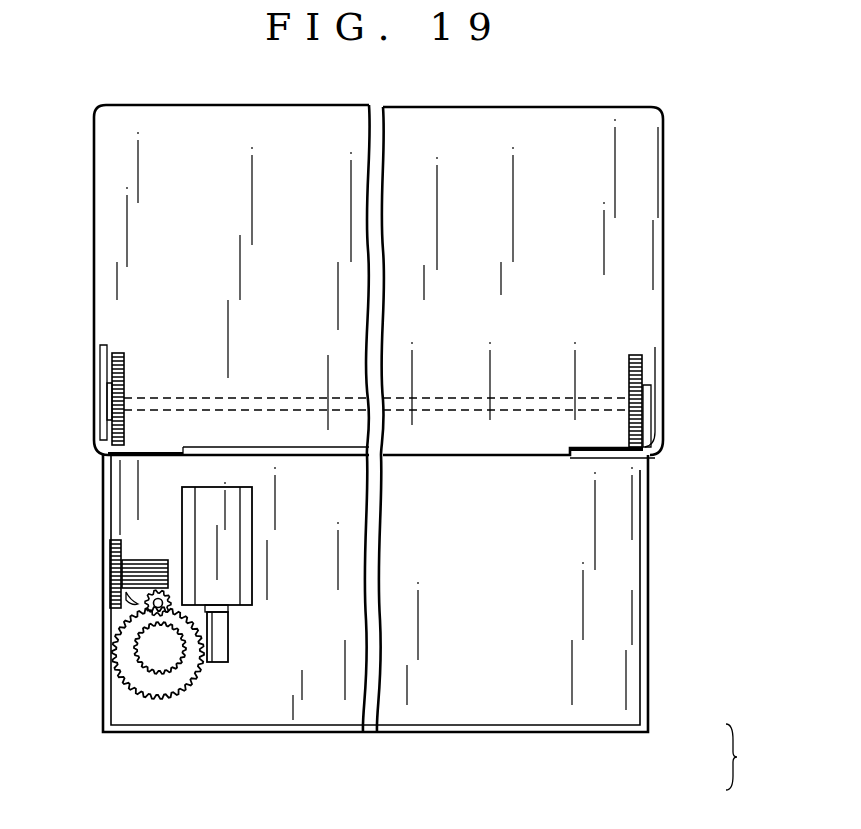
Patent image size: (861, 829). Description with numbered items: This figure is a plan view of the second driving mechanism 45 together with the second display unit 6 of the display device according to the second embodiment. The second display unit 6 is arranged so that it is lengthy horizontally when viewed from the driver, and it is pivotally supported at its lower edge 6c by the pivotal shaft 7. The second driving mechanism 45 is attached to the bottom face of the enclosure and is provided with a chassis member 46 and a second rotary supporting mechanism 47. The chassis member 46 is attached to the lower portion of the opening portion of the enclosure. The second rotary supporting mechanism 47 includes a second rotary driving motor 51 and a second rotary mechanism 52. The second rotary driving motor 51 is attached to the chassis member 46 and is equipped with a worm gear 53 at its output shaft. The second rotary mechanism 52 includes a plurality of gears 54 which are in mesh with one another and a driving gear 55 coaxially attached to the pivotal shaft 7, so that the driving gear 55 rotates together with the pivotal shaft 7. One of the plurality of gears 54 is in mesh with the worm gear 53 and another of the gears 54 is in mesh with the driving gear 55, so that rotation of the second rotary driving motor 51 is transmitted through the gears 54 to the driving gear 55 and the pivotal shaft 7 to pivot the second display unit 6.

The second display unit 6 is at (668, 214).
The lower edge 6c is at (160, 428).
The pivotal shaft 7 is at (498, 410).
The driving gear 55 is at (124, 366).
The chassis member 46 is at (651, 590).
The second rotary supporting mechanism 47 is at (353, 563).
The second driving mechanism 45 is at (758, 757).
The second rotary driving motor 51 is at (253, 505).
The second rotary mechanism 52 is at (241, 665).
The worm gear 53 is at (222, 632).
The gears 54 is at (76, 571).